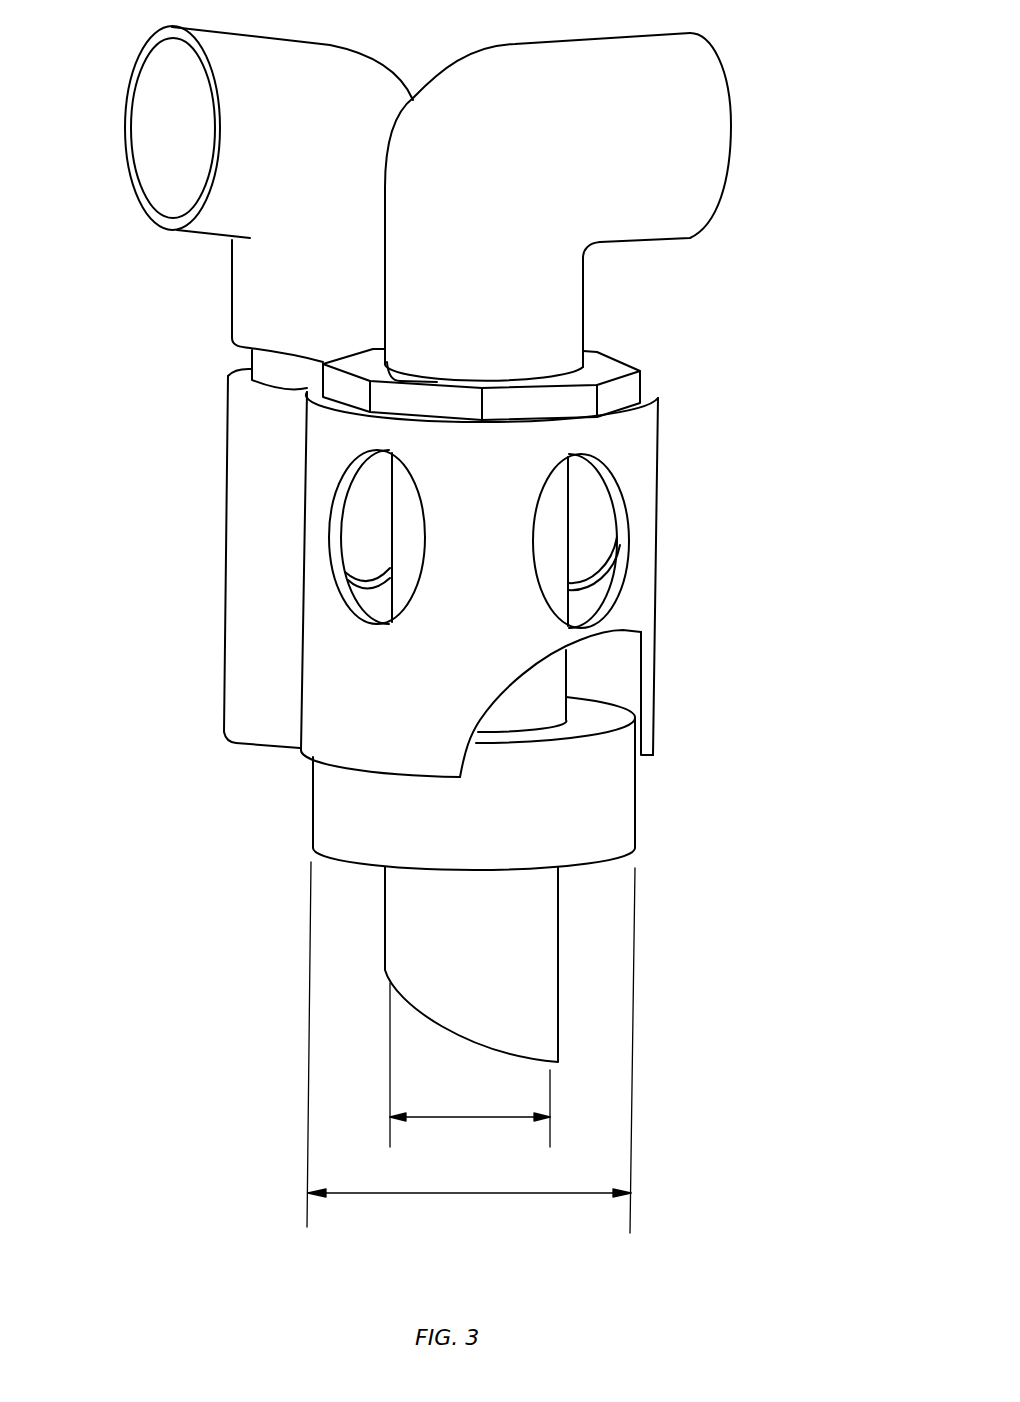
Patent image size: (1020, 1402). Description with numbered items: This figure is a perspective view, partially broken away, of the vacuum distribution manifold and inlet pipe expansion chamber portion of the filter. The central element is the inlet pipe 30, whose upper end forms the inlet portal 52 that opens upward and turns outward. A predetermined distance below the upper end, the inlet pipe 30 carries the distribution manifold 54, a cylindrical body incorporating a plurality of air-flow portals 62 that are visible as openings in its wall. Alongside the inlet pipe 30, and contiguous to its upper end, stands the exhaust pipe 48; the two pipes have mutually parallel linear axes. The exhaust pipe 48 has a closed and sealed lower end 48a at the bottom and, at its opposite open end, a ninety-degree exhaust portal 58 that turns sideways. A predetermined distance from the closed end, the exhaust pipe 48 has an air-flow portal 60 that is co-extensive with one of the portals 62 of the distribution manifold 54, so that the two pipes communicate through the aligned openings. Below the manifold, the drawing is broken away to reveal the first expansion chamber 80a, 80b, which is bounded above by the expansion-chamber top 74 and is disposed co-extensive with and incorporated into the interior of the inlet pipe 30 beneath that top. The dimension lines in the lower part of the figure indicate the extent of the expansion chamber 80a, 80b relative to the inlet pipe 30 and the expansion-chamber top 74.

The inlet pipe 30 is at (510, 185).
The exhaust pipe 48 is at (328, 160).
The closed and sealed lower end 48a is at (333, 767).
The inlet portal 52 is at (740, 120).
The distribution manifold 54 is at (392, 730).
The 90-degree exhaust portal 58 is at (172, 123).
The air-flow portal 60 is at (382, 537).
The air-flow portals 62 is at (380, 592).
The expansion-chamber top 74 is at (518, 834).
The first expansion chamber 80a is at (465, 1118).
The first expansion chamber 80b is at (492, 1193).